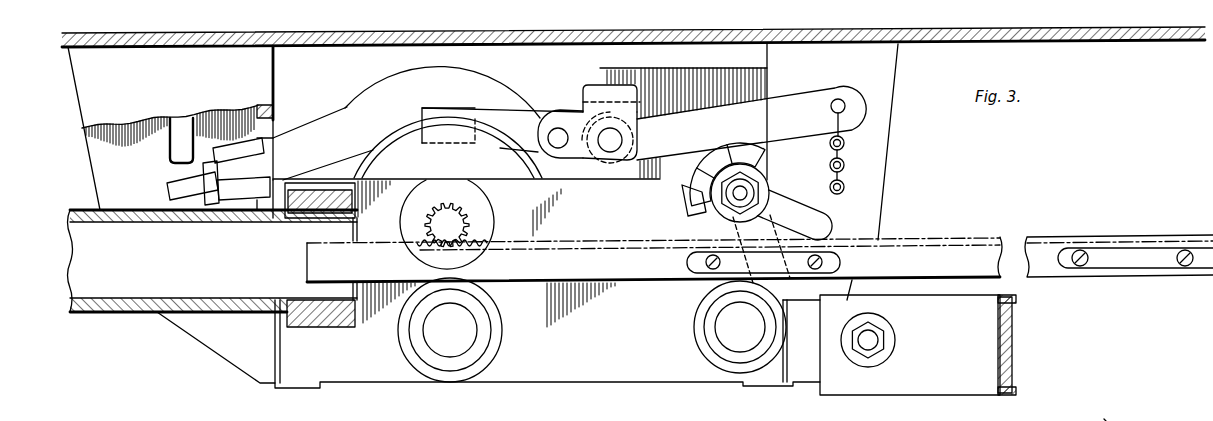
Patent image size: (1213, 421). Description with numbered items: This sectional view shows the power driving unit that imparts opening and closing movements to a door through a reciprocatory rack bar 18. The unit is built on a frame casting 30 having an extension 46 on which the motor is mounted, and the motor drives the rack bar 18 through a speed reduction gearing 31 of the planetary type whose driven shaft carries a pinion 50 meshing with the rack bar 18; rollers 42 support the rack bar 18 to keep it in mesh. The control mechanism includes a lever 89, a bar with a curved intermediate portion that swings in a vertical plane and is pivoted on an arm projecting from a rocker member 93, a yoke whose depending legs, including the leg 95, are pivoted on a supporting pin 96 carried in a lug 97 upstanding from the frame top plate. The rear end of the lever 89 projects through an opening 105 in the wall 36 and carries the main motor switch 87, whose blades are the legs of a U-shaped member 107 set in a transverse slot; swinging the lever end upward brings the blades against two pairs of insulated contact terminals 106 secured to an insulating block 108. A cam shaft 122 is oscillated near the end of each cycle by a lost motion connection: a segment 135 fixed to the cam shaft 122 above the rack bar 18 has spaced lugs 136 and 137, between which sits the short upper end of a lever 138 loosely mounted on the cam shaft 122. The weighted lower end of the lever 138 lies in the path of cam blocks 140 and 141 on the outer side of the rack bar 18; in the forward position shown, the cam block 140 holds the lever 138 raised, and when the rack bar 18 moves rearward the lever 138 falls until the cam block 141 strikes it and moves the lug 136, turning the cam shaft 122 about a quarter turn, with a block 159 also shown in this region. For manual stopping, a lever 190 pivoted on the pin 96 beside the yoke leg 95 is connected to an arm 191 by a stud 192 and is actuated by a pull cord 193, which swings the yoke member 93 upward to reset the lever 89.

The rack bar 18 is at (638, 270).
The frame casting 30 is at (650, 366).
The speed reduction gearing 31 is at (460, 160).
The wall 36 is at (260, 103).
The rollers 42 is at (490, 352).
The extension 46 is at (260, 70).
The pinion 50 is at (438, 222).
The main motor switch 87 is at (160, 161).
The lever 89 is at (348, 127).
The rocker member 93 is at (595, 90).
The leg 95 is at (660, 52).
The supporting pin 96 is at (610, 143).
The lug 97 is at (590, 173).
The opening 105 is at (278, 124).
The insulated contact terminals 106 is at (176, 133).
The U-shaped member 107 is at (175, 187).
The insulating block 108 is at (1105, 420).
The cam shaft 122 is at (746, 193).
The segment 135 is at (752, 164).
The lug 136 is at (753, 115).
The lug 137 is at (688, 205).
The lever 138 is at (808, 221).
The cam block 140 is at (688, 262).
The cam block 141 is at (1125, 257).
The block 159 is at (677, 77).
The lever 190 is at (807, 103).
The arm 191 is at (572, 125).
The stud 192 is at (549, 133).
The pull cord 193 is at (841, 158).